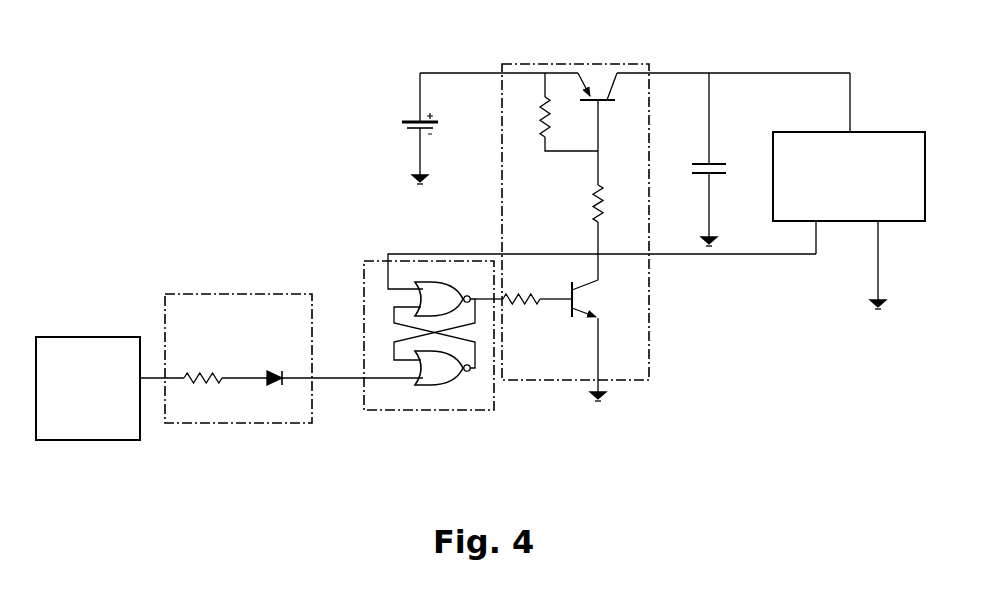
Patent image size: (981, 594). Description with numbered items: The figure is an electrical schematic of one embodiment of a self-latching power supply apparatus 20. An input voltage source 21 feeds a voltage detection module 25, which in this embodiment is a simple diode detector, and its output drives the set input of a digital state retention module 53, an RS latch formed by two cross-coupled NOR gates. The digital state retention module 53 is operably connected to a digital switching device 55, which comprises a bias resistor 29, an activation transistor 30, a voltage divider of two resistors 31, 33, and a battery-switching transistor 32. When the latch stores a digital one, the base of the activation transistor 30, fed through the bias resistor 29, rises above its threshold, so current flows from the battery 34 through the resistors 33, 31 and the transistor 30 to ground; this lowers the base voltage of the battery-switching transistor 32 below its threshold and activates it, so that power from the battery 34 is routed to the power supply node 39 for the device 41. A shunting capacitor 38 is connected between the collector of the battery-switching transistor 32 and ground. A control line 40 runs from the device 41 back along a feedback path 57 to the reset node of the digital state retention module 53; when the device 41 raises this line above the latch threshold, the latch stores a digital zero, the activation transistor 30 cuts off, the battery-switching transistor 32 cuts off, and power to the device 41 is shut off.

The power control circuit 20 is at (316, 45).
The input voltage source 21 is at (111, 439).
The voltage detection module 25 is at (286, 322).
The bias resistor 29 is at (540, 314).
The activation transistor 30 is at (594, 300).
The resistor 31 is at (576, 201).
The battery-switching transistor 32 is at (619, 107).
The resistor 33 is at (531, 122).
The battery 34 is at (384, 124).
The shunting capacitor 38 is at (702, 146).
The power supply node 39 is at (836, 64).
The control line 40 is at (827, 254).
The device 41 is at (898, 217).
The digital state retention module 53 is at (464, 406).
The digital switching device 55 is at (622, 370).
The feedback line 57 is at (402, 248).